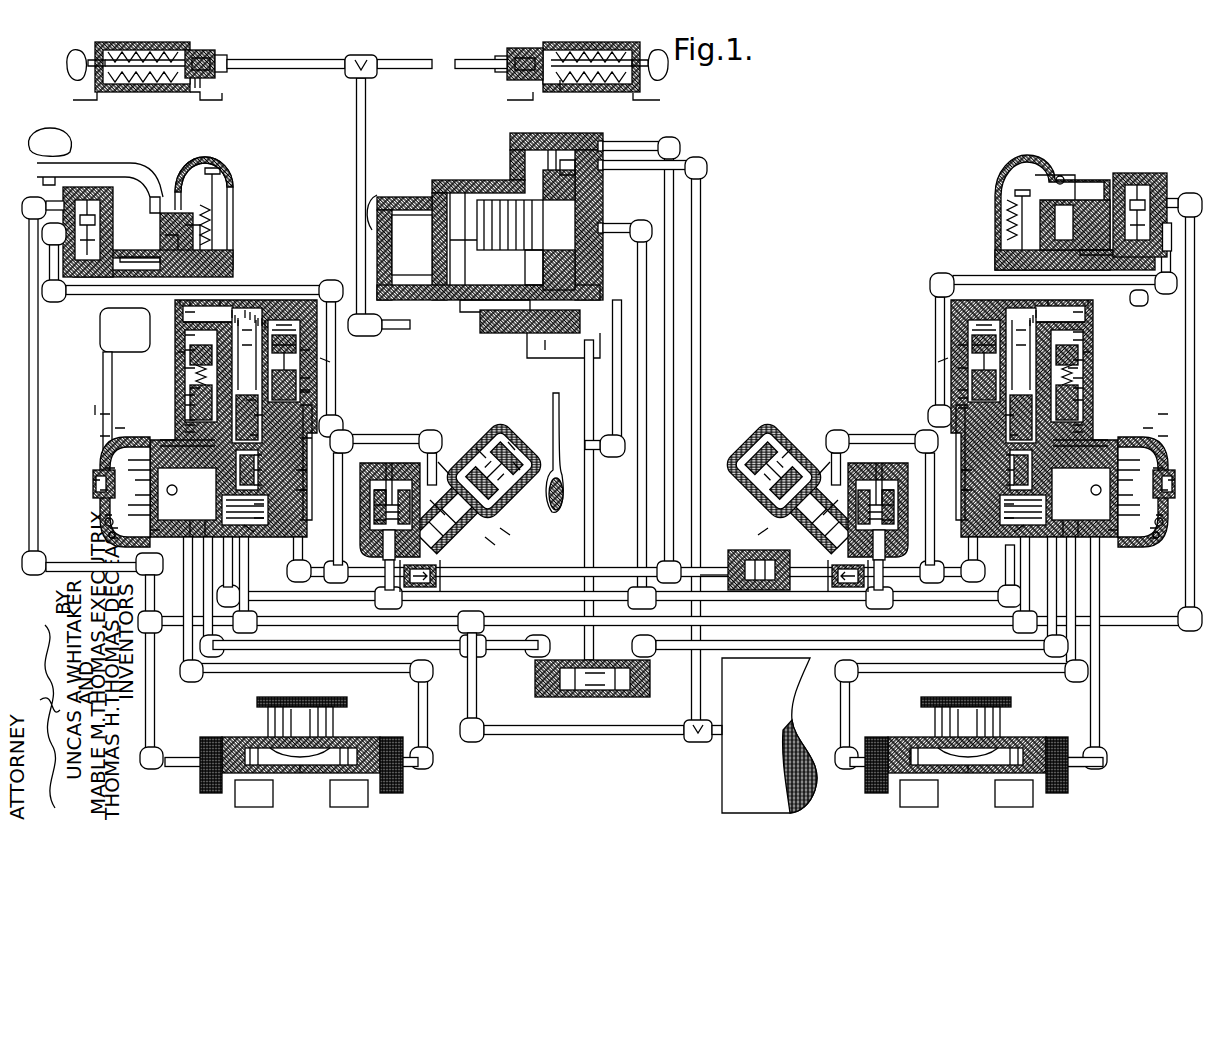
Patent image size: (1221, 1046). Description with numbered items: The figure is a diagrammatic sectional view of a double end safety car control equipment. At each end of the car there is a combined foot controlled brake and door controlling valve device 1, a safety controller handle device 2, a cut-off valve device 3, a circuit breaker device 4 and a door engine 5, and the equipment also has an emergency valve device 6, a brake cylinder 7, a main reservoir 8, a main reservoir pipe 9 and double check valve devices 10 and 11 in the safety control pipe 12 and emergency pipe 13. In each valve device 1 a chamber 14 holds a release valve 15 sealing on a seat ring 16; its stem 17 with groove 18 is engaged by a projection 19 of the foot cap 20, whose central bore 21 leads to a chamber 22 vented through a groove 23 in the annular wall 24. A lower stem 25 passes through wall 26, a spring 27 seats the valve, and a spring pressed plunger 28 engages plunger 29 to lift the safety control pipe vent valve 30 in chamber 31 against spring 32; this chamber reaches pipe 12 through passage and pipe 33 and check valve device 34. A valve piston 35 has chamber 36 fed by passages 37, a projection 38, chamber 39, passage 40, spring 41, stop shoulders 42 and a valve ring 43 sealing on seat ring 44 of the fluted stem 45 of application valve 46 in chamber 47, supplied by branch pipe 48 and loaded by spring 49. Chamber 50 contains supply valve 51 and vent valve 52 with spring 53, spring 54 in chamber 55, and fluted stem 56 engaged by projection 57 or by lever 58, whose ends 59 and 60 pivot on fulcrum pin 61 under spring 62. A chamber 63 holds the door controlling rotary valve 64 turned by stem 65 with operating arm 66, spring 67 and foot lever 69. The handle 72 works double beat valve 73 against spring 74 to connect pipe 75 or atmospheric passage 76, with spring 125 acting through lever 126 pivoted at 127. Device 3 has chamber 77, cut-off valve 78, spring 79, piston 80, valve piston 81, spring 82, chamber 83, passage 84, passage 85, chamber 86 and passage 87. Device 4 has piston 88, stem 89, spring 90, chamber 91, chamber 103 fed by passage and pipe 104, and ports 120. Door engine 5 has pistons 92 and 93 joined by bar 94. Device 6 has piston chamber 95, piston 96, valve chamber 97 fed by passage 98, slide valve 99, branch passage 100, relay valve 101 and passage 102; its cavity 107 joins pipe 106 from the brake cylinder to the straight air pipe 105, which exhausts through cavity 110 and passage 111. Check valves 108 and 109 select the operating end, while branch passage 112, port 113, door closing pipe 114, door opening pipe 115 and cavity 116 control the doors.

The combined foot controlled brake and door controlling valve device 1 is at (1005, 566).
The safety controller handle device 2 is at (225, 175).
The cut-off valve device 3 is at (470, 460).
The circuit breaker device 4 is at (73, 100).
The door engine 5 is at (634, 752).
The emergency valve device 6 is at (515, 136).
The brake cylinder 7 is at (556, 452).
The main reservoir 8 is at (769, 735).
The main reservoir pipe 9 is at (40, 372).
The double check valve device 10 is at (740, 560).
The double check valve device 11 is at (570, 668).
The safety control pipe 12 is at (434, 185).
The emergency pipe 13 is at (640, 232).
The chamber 14 is at (316, 392).
The release valve 15 is at (320, 378).
The seat ring 16 is at (255, 315).
The stem 17 is at (258, 318).
The groove 18 is at (262, 318).
The projection 19 is at (245, 310).
The foot cap 20 is at (265, 320).
The central bore 21 is at (250, 312).
The chamber 22 is at (185, 312).
The groove 23 is at (100, 342).
The annular wall 24 is at (104, 360).
The stem 25 is at (247, 403).
The wall 26 is at (320, 390).
The spring 27 is at (185, 420).
The spring pressed plunger 28 is at (316, 352).
The plunger 29 is at (330, 360).
The safety control pipe vent valve 30 is at (300, 346).
The valve chamber 31 is at (300, 335).
The spring 32 is at (379, 318).
The passage and pipe 33 is at (385, 440).
The check valve device 34 is at (432, 588).
The valve piston 35 is at (255, 435).
The chamber 36 is at (185, 432).
The passages 37 is at (100, 416).
The projection 38 is at (340, 438).
The chamber 39 is at (258, 470).
The passage 40 is at (330, 458).
The spring 41 is at (258, 485).
The stop shoulders 42 is at (185, 425).
The annular valve ring 43 is at (258, 455).
The seat ring 44 is at (330, 473).
The fluted stem 45 is at (330, 493).
The application valve 46 is at (258, 504).
The chamber 47 is at (258, 518).
The branch pipe and passage 48 is at (250, 565).
The spring 49 is at (250, 520).
The chamber 50 is at (185, 368).
The valve 51 is at (190, 388).
The valve 52 is at (183, 350).
The spring 53 is at (1110, 338).
The spring 54 is at (185, 395).
The chamber 55 is at (185, 405).
The fluted stem 56 is at (185, 335).
The projection 57 is at (190, 300).
The lever 58 is at (220, 300).
The end 59 is at (180, 300).
The end 60 is at (232, 310).
The fulcrum pin 61 is at (235, 315).
The spring 62 is at (238, 318).
The chamber 63 is at (110, 445).
The door controlling rotary valve 64 is at (105, 470).
The rotatable stem 65 is at (93, 482).
The operating arm 66 is at (107, 517).
The spring 67 is at (112, 530).
The foot lever 69 is at (95, 410).
The handle 72 is at (98, 172).
The double beat valve 73 is at (100, 212).
The spring 74 is at (95, 222).
The pipe and passage 75 is at (92, 296).
The atmospheric passage 76 is at (55, 302).
The chamber 77 is at (438, 460).
The cut-off valve 78 is at (505, 530).
The spring 79 is at (490, 540).
The piston 80 is at (510, 440).
The valve piston 81 is at (375, 502).
The spring 82 is at (380, 520).
The chamber 83 is at (373, 490).
The passage 84 is at (385, 480).
The passage 85 is at (646, 485).
The chamber 86 is at (515, 460).
The passage 87 is at (478, 445).
The piston 88 is at (208, 55).
The stem 89 is at (72, 52).
The spring 90 is at (140, 85).
The chamber 91 is at (190, 88).
The door opening piston 92 is at (345, 750).
The door closing piston 93 is at (250, 750).
The bar 94 is at (325, 775).
The piston chamber 95 is at (578, 196).
The piston 96 is at (578, 214).
The valve chamber 97 is at (500, 200).
The passage and pipe 98 is at (548, 150).
The slide valve 99 is at (460, 200).
The branch passage 100 is at (572, 168).
The relay valve 101 is at (387, 199).
The passage 102 is at (580, 262).
The chamber 103 is at (205, 72).
The passage and pipe 104 is at (325, 52).
The straight air pipe 105 is at (535, 360).
The pipe and passage 106 is at (520, 335).
The cavity 107 is at (478, 315).
The double check valve 108 is at (750, 548).
The check valve 109 is at (600, 697).
The cavity 110 is at (100, 437).
The passage 111 is at (115, 430).
The branch passage 112 is at (150, 532).
The port 113 is at (112, 540).
The door closing passage and pipe 114 is at (1118, 556).
The door opening pipe and passage 115 is at (265, 672).
The cavity 116 is at (100, 490).
The ports 120 is at (590, 90).
The spring 125 is at (233, 210).
The lever 126 is at (160, 200).
The pivot 127 is at (1095, 260).